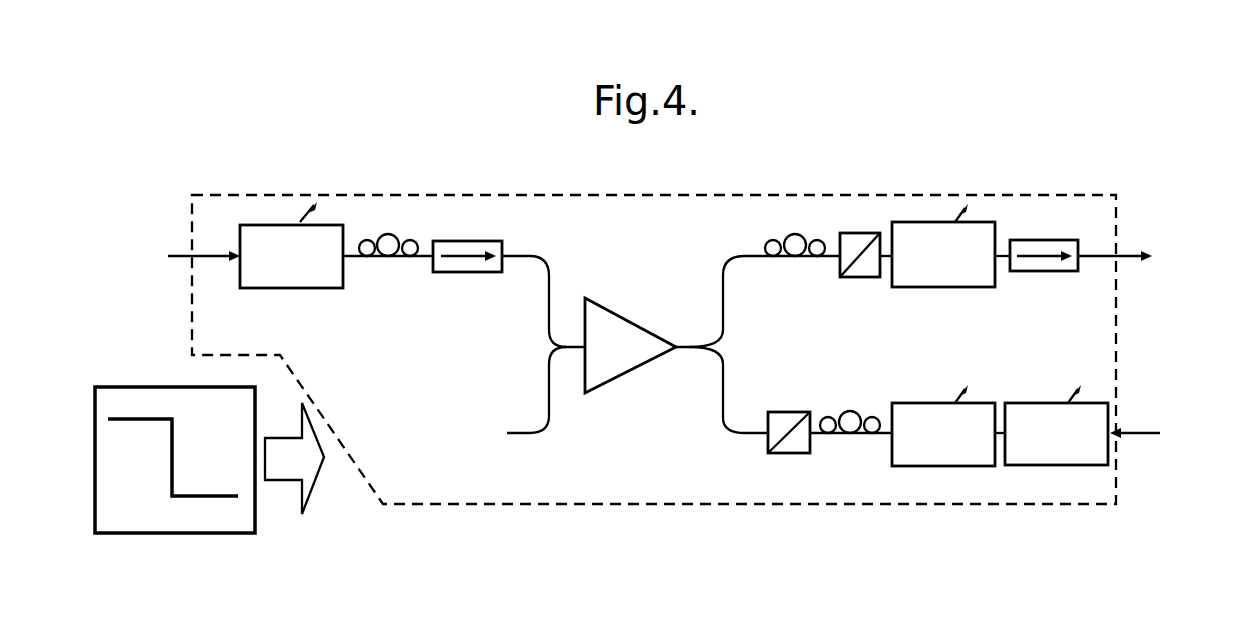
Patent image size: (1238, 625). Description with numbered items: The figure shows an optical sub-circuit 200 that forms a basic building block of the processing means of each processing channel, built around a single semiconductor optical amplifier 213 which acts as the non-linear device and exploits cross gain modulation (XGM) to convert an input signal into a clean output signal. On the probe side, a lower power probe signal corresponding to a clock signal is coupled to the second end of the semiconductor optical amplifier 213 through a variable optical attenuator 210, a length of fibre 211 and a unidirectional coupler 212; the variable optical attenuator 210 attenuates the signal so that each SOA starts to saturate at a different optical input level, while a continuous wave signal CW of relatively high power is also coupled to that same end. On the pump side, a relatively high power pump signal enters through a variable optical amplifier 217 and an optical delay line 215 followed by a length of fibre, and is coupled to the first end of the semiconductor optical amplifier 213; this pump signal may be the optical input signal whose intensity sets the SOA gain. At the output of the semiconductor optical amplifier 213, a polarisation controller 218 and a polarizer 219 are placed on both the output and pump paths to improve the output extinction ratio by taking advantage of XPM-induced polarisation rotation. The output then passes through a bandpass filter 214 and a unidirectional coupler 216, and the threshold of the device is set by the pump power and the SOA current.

The wavelength conversion system / basic block 200 is at (995, 75).
The variable optical attenuator 210 is at (262, 225).
The length of fibre 211 is at (390, 234).
The optical isolator 212 is at (465, 240).
The semiconductor optical amplifier 213 is at (633, 373).
The bandpass filter 214 is at (933, 222).
The optical delay line 215 is at (948, 466).
The unidirectional coupler 216 is at (1063, 240).
The variable optical amplifier 217 is at (1063, 465).
The polarisation controller 218 is at (795, 233).
The polarizer 219 is at (852, 233).